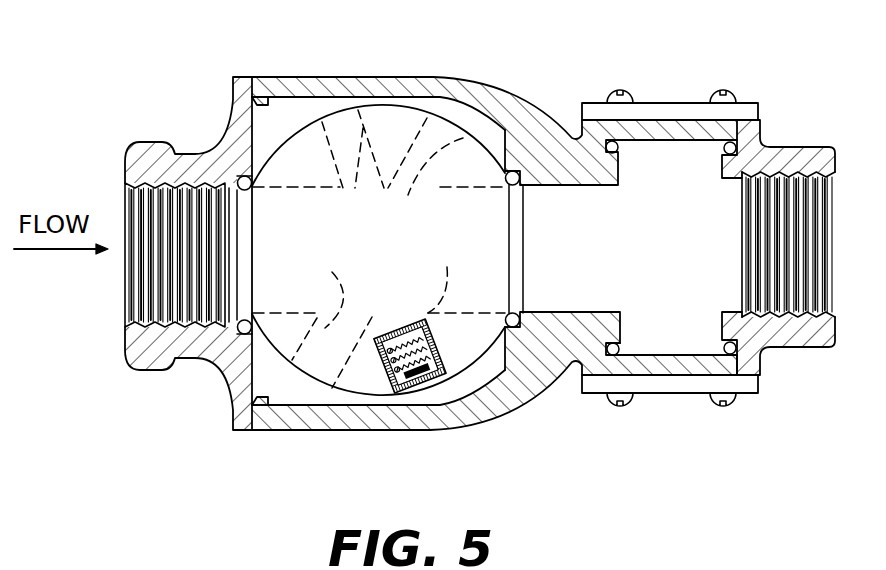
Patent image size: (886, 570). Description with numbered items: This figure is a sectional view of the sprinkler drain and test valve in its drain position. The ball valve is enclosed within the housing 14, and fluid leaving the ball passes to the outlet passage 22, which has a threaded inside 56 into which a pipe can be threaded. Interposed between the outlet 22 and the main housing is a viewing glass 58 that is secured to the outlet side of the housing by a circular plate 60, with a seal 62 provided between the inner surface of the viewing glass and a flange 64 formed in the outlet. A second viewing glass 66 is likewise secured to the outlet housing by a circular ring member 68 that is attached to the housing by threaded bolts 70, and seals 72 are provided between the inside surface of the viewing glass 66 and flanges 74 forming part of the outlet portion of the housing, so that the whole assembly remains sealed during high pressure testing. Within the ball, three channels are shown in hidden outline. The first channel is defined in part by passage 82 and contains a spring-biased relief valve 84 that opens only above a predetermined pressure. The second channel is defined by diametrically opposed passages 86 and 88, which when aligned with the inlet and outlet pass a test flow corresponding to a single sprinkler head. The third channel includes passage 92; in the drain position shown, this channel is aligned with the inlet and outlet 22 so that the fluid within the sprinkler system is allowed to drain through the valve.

The housing 14 is at (263, 77).
The outlet passage 22 is at (782, 252).
The threaded inside 56 is at (820, 172).
The viewing glass 58 is at (632, 147).
The circular plate 60 is at (643, 102).
The seal 62 is at (751, 108).
The flange 64 is at (727, 153).
The viewing glass 66 is at (693, 371).
The circular ring member 68 is at (582, 377).
The threaded bolts 70 is at (627, 403).
The seals 72 is at (620, 350).
The flanges 74 is at (603, 320).
The passage 82 is at (353, 167).
The relief valve 84 is at (385, 378).
The passage 86 is at (332, 320).
The passage 88 is at (425, 175).
The passage 92 is at (440, 276).